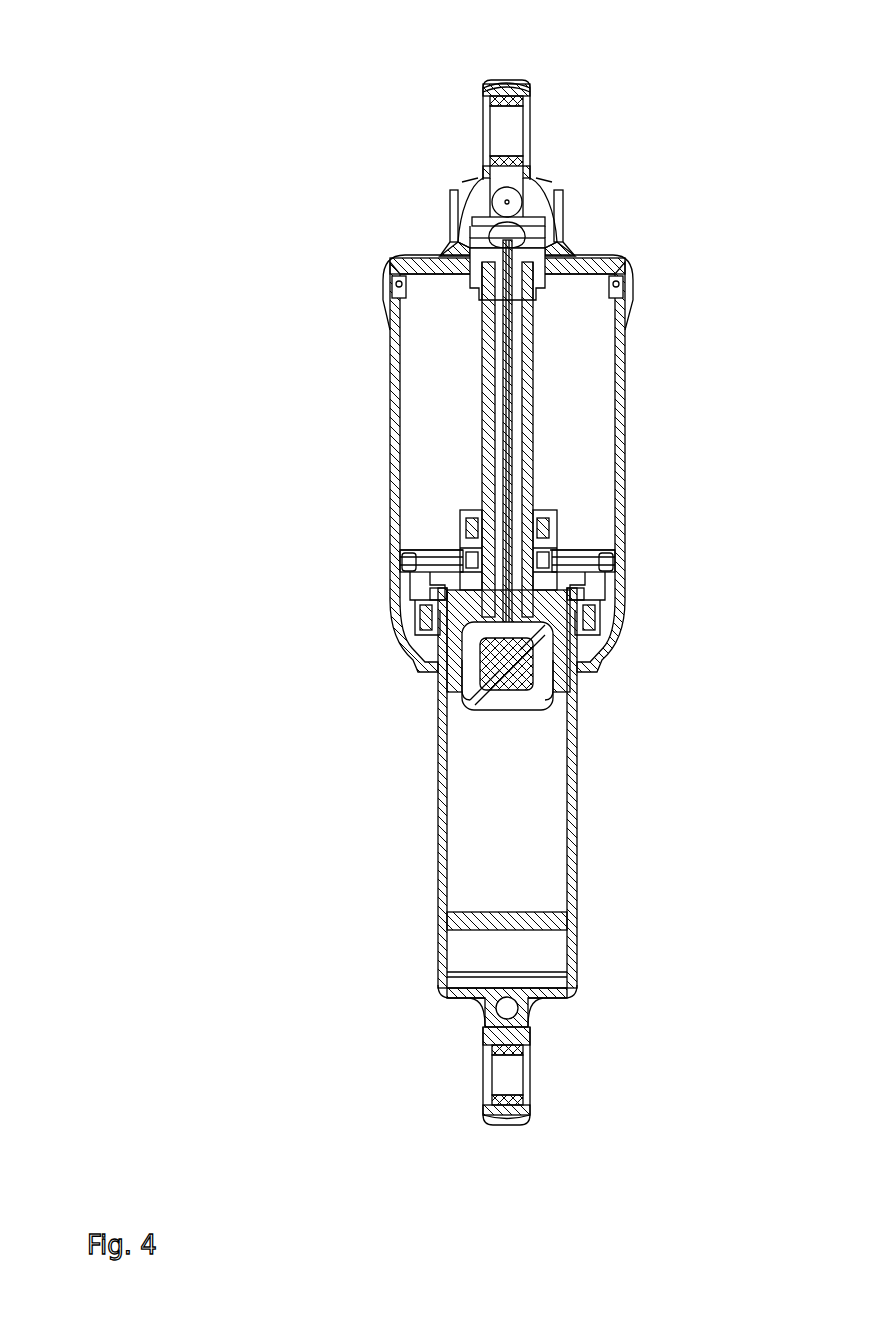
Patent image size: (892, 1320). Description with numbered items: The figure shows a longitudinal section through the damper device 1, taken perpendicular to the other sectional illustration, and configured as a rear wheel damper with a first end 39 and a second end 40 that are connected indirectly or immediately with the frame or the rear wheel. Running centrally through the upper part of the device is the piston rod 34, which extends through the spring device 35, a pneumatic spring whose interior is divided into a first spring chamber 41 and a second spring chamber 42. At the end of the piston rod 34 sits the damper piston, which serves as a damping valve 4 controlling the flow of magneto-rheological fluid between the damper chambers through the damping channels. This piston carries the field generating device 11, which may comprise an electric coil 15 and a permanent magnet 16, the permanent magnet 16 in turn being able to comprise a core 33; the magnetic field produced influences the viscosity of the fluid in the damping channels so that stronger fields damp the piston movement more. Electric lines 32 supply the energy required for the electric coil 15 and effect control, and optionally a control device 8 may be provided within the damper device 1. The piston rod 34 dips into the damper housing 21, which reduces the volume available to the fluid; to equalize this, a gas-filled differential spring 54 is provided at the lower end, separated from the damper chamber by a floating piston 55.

The damper device 1 is at (255, 57).
The first end 39 is at (543, 118).
The control device 8 is at (455, 192).
The electric lines 32 is at (513, 318).
The piston rod 34 is at (545, 413).
The spring device 35 is at (382, 463).
The first spring chamber 41 is at (590, 462).
The second spring chamber 42 is at (602, 615).
The core 33 is at (575, 685).
The permanent magnet 16 is at (460, 705).
The electric coil 15 is at (479, 702).
The field generating device 11 is at (522, 702).
The damping valve 4 is at (496, 880).
The damper housing 21 is at (588, 845).
The floating piston 55 is at (452, 916).
The differential spring 54 is at (470, 945).
The second end 40 is at (545, 1115).